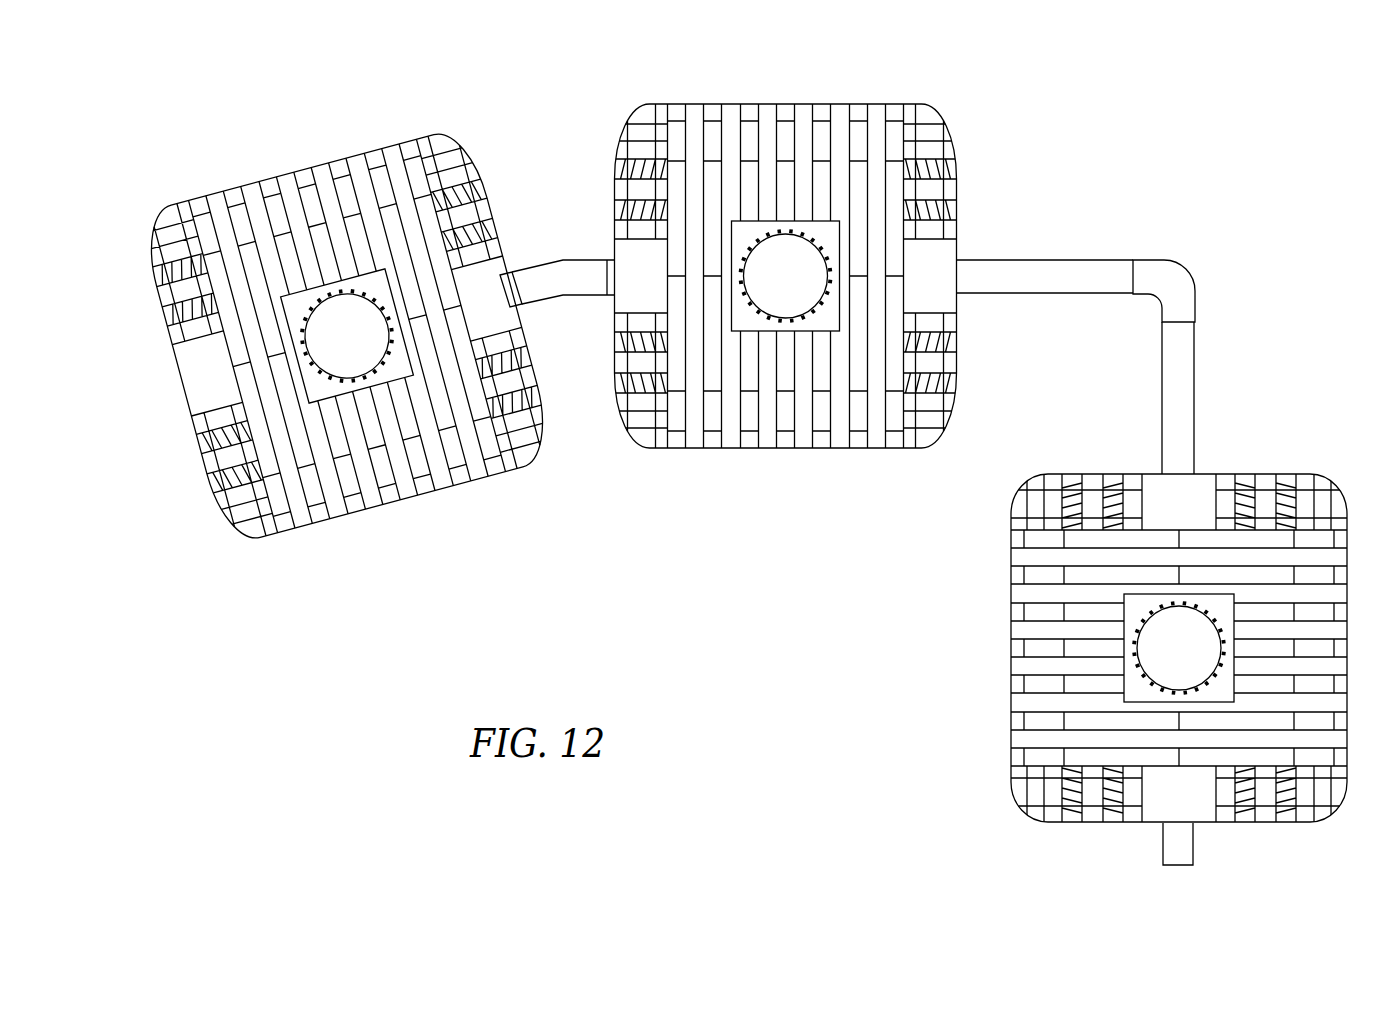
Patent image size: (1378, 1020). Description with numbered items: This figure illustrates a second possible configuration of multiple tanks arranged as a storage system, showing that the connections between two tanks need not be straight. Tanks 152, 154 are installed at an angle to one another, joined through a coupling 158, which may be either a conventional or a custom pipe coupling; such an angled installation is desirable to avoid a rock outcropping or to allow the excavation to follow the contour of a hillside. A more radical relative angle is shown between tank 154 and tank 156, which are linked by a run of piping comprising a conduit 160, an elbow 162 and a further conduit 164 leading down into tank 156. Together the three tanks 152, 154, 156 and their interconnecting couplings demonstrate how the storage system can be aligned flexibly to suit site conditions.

The tank 152 is at (237, 183).
The tank 154 is at (758, 103).
The tank 156 is at (1052, 817).
The flexible connector 158 is at (573, 253).
The horizontal conduit 160 is at (1045, 260).
The elbow fitting 162 is at (1165, 258).
The vertical conduit 164 is at (1197, 353).